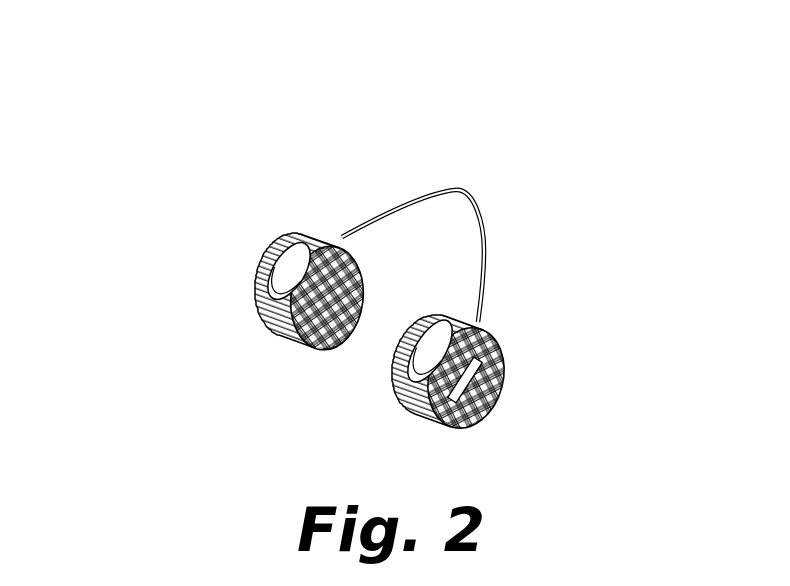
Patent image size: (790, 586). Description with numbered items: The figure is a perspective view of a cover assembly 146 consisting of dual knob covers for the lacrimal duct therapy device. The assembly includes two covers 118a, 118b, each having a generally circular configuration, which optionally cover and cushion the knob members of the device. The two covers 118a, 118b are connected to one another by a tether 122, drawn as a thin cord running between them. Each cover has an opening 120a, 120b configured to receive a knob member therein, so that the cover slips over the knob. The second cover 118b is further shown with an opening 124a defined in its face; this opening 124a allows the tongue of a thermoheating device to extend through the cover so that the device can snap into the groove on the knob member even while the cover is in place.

The cover assembly 146 is at (356, 219).
The cover 118a is at (240, 245).
The cover 118b is at (477, 362).
The opening 120a is at (277, 259).
The opening 120b is at (422, 349).
The tether 122 is at (473, 191).
The opening 124a is at (503, 380).